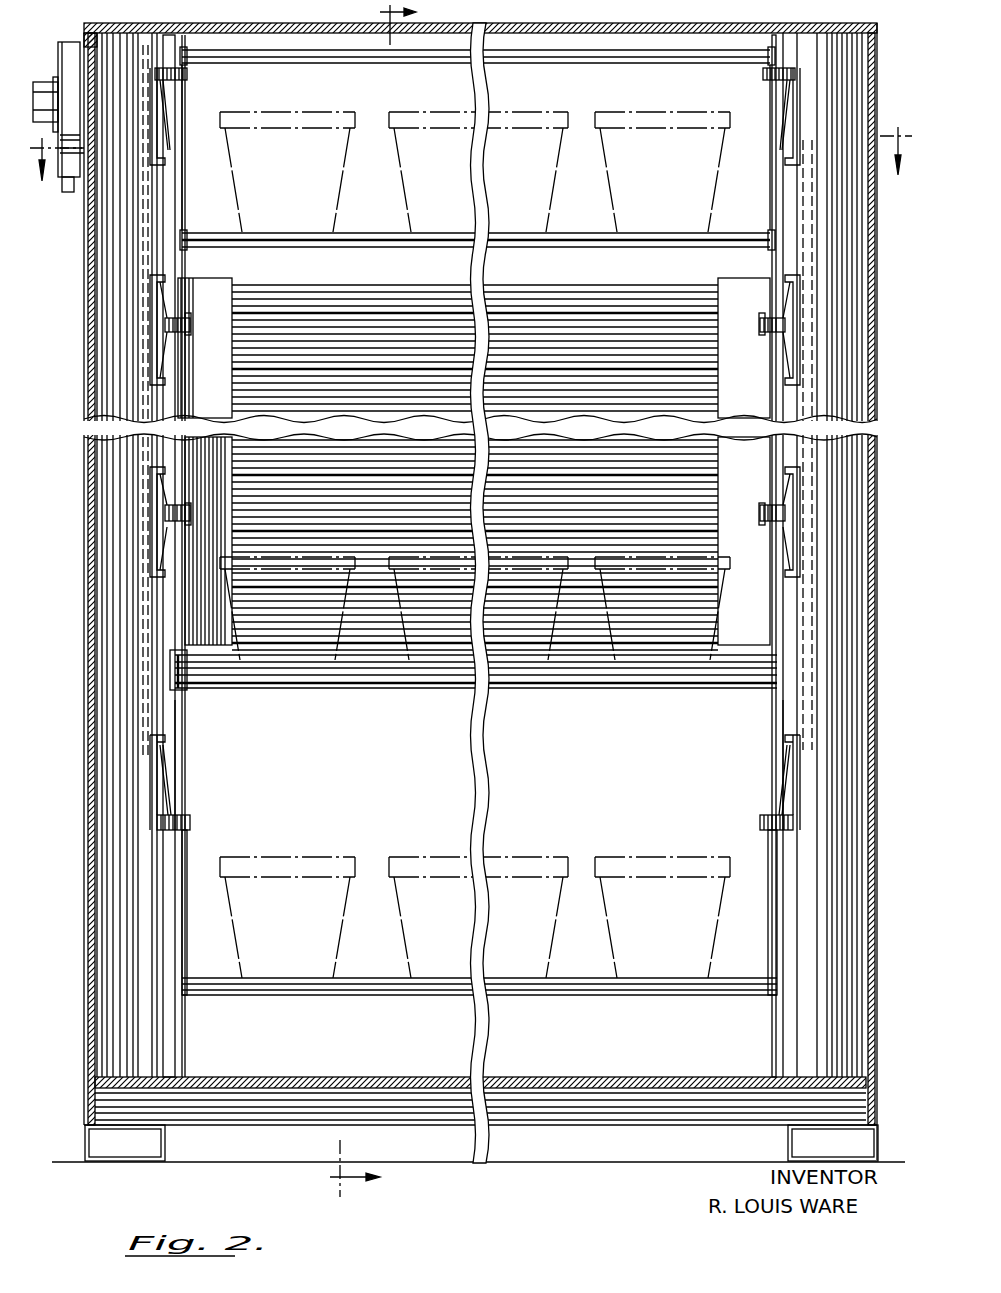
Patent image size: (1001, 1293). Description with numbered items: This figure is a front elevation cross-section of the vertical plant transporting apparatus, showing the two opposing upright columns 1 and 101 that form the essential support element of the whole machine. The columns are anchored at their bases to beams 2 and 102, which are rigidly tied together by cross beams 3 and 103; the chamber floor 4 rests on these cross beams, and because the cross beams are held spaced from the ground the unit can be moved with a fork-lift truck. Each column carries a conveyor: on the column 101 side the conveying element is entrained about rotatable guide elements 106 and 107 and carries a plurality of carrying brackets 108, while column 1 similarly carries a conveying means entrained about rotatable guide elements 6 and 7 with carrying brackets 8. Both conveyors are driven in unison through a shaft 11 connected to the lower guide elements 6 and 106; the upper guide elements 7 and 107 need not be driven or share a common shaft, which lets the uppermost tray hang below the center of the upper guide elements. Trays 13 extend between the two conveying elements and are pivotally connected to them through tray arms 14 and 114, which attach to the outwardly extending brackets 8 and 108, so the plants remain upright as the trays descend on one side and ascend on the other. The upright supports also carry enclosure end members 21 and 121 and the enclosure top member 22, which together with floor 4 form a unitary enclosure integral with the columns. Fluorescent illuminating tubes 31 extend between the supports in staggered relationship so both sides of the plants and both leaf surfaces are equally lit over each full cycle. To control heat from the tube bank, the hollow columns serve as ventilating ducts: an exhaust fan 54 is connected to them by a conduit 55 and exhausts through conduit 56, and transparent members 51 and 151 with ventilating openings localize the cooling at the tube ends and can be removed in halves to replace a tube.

The upright column 1 is at (88, 548).
The beam 2 is at (88, 1150).
The cross beam 3 is at (370, 602).
The chamber floor 4 is at (592, 1086).
The rotatable guide element 6 is at (178, 731).
The rotatable guide element 7 is at (165, 205).
The carrying bracket 8 is at (170, 302).
The shaft 11 is at (186, 678).
The tray 13 is at (403, 250).
The tray arm 14 is at (187, 846).
The enclosure end member 21 is at (92, 606).
The enclosure top member 22 is at (542, 23).
The illuminating tube 31 is at (580, 286).
The member having ventilating openings 51 is at (222, 278).
The exhaust fan 54 is at (61, 46).
The conduit 55 is at (583, 68).
The exhaust conduit 56 is at (67, 193).
The upright column 101 is at (870, 458).
The beam 102 is at (878, 1143).
The cross beam 103 is at (350, 1125).
The rotatable guide element 106 is at (800, 710).
The rotatable guide element 107 is at (795, 186).
The carrying bracket 108 is at (785, 308).
The tray arm 114 is at (775, 378).
The enclosure end member 121 is at (870, 492).
The member having ventilating openings 151 is at (735, 278).